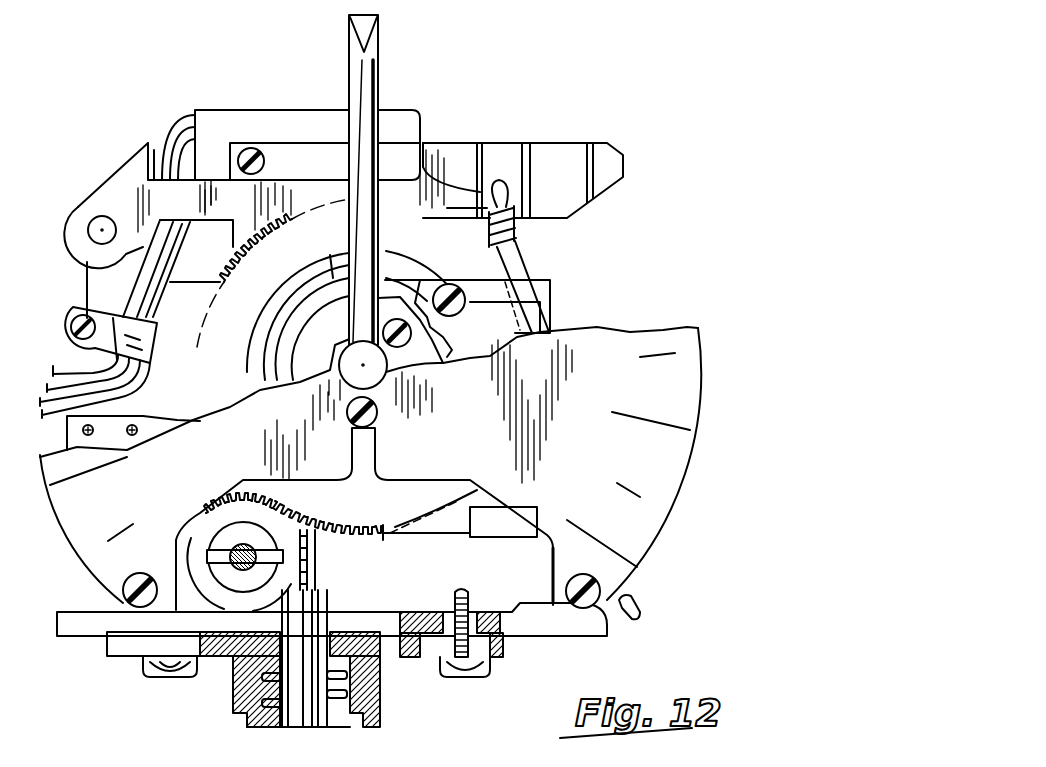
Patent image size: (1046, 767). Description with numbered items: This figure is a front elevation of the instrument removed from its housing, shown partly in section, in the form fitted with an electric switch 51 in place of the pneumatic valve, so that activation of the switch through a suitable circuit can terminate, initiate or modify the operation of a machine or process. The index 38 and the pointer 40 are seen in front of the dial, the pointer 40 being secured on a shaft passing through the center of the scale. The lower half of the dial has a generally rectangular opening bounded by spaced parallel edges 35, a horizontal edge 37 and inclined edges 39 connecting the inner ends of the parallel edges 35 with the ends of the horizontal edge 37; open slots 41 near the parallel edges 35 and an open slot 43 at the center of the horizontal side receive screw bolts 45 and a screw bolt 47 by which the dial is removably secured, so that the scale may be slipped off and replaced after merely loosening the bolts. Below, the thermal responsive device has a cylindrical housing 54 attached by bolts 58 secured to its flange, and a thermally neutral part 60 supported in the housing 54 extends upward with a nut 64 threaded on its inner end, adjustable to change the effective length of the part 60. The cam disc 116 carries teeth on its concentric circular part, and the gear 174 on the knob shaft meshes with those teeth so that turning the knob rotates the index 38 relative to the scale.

The spaced parallel edges 35 is at (548, 568).
The horizontal edge 37 is at (413, 489).
The index 38 is at (374, 40).
The inclined edges 39 is at (520, 523).
The pointer 40 is at (366, 133).
The open slots 41 is at (577, 638).
The open slot 43 is at (375, 452).
The screw bolts 45 is at (125, 592).
The screw bolt 47 is at (380, 410).
The electric switch 51 is at (287, 127).
The cylindrical housing 54 is at (372, 695).
The bolts 58 is at (487, 680).
The thermally neutral part 60 is at (313, 720).
The nut 64 is at (316, 558).
The cam disc 116 is at (337, 393).
The gear 174 is at (220, 518).